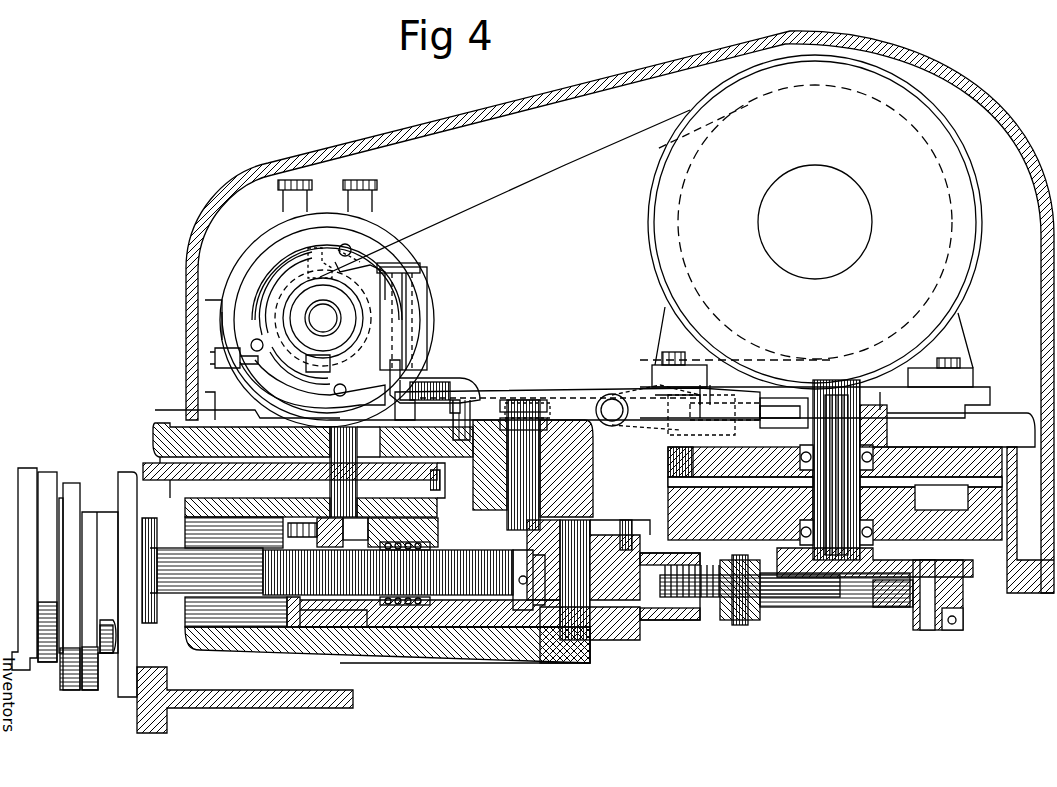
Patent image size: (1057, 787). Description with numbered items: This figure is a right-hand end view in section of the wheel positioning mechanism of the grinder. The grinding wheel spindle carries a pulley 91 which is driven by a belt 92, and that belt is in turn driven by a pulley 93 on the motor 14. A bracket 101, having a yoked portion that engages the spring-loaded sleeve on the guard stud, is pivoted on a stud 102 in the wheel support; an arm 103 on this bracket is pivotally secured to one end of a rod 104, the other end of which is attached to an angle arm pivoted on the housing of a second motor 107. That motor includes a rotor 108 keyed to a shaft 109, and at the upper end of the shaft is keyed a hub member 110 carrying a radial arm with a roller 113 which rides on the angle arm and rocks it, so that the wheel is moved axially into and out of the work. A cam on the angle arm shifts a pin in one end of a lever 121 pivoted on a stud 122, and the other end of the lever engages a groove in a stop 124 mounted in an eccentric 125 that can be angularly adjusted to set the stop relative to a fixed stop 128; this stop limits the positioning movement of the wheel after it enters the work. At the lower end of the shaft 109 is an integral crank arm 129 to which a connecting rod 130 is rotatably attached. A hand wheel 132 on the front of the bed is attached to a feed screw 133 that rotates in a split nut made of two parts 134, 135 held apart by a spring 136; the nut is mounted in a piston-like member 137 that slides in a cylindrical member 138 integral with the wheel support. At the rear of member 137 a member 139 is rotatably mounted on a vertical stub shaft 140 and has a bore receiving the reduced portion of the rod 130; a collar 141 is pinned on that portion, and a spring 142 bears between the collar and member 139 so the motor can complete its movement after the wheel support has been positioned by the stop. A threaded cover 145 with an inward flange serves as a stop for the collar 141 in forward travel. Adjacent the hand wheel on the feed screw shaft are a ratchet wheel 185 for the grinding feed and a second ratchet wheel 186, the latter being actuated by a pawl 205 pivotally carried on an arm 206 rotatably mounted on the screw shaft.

The motor 14 is at (984, 190).
The pulley 93 is at (852, 90).
The belt 92 is at (505, 193).
The pulley 91 is at (305, 305).
The bracket 101 is at (428, 312).
The stud 102 is at (422, 268).
The arm 103 is at (430, 380).
The rod 104 is at (495, 395).
The motor 107 is at (668, 455).
The rotor 108 is at (915, 497).
The shaft 109 is at (878, 441).
The hub member 110 is at (880, 429).
The roller 113 is at (798, 395).
The lever 121 is at (556, 400).
The stud 122 is at (608, 395).
The stop 124 is at (585, 460).
The eccentric 125 is at (593, 490).
The fixed stop 128 is at (645, 535).
The crank arm 129 is at (963, 575).
The connecting rod 130 is at (850, 607).
The hand wheel 132 is at (50, 472).
The feed screw 133 is at (495, 603).
The split nut part 134 is at (372, 630).
The split nut part 135 is at (432, 610).
The spring 136 is at (410, 640).
The piston-like member 137 is at (547, 663).
The cylindrical member 138 is at (590, 663).
The member 139 is at (672, 625).
The vertical stub shaft 140 is at (595, 640).
The collar 141 is at (750, 622).
The spring 142 is at (728, 620).
The cover 145 is at (762, 612).
The ratchet wheel 185 is at (30, 468).
The second ratchet wheel 186 is at (75, 483).
The pawl 205 is at (60, 690).
The arm 206 is at (95, 695).